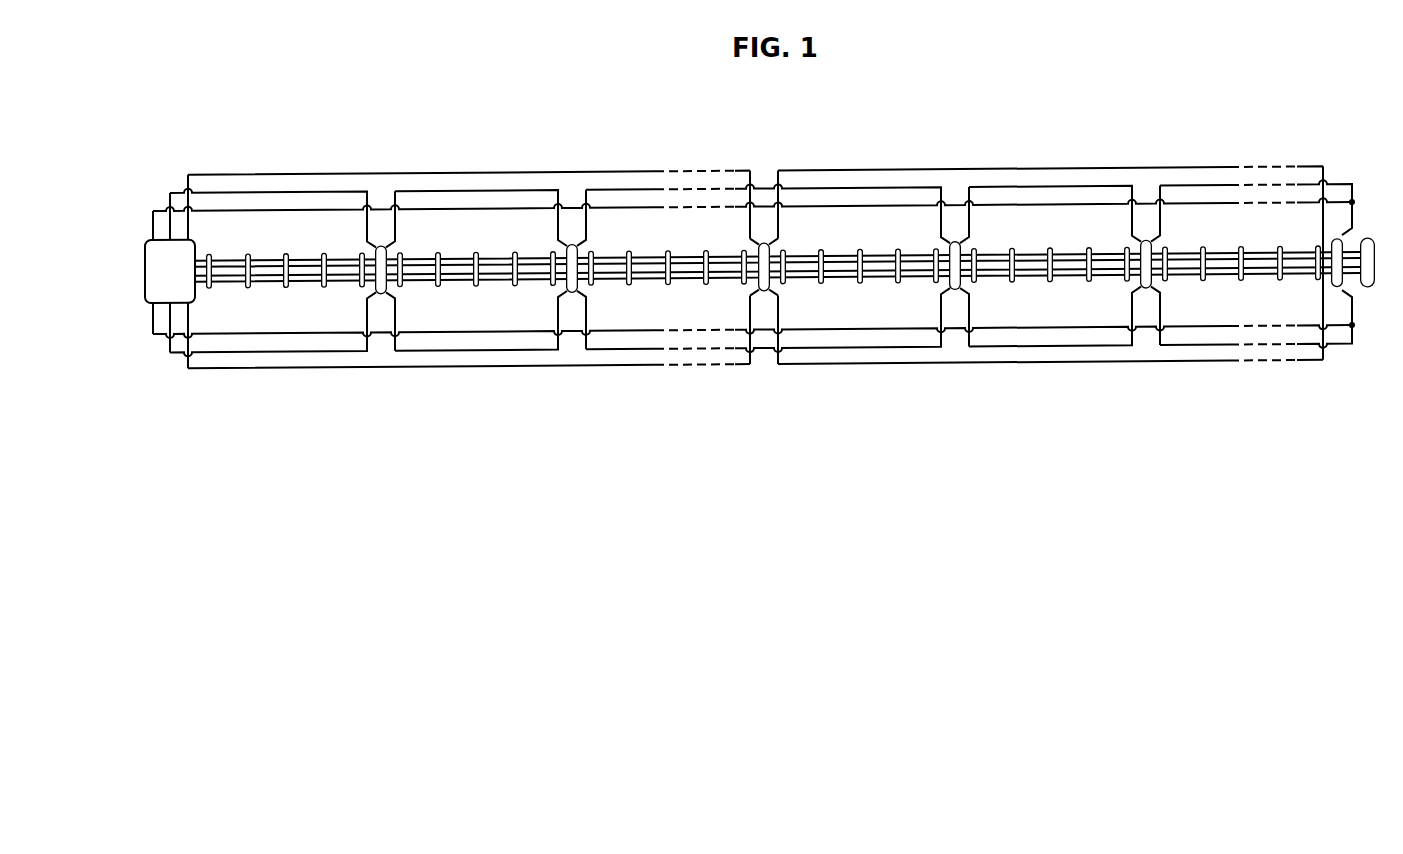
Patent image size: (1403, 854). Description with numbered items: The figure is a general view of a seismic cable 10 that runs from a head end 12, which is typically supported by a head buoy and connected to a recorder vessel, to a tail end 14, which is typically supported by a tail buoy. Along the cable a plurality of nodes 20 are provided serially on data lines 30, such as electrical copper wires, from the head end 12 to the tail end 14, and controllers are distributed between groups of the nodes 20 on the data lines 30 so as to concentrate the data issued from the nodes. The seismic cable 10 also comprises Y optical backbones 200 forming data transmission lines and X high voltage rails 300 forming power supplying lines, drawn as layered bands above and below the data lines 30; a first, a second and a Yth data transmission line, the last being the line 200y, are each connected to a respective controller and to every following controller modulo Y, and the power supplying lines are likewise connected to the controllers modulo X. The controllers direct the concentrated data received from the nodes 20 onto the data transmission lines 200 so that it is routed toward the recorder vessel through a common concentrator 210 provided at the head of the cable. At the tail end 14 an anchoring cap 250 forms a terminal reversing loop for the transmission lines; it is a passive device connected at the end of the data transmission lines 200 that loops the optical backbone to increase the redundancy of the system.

The seismic cable 10 is at (418, 107).
The head end 12 is at (202, 319).
The tail end 14 is at (1353, 257).
The nodes 20 is at (246, 287).
The data lines 30 is at (496, 259).
The optical backbones 200 is at (898, 156).
The Yth data transmission line 200y is at (319, 173).
The common concentrator 210 is at (189, 256).
The anchoring cap 250 is at (1375, 194).
The High Voltage rails 300 is at (817, 371).